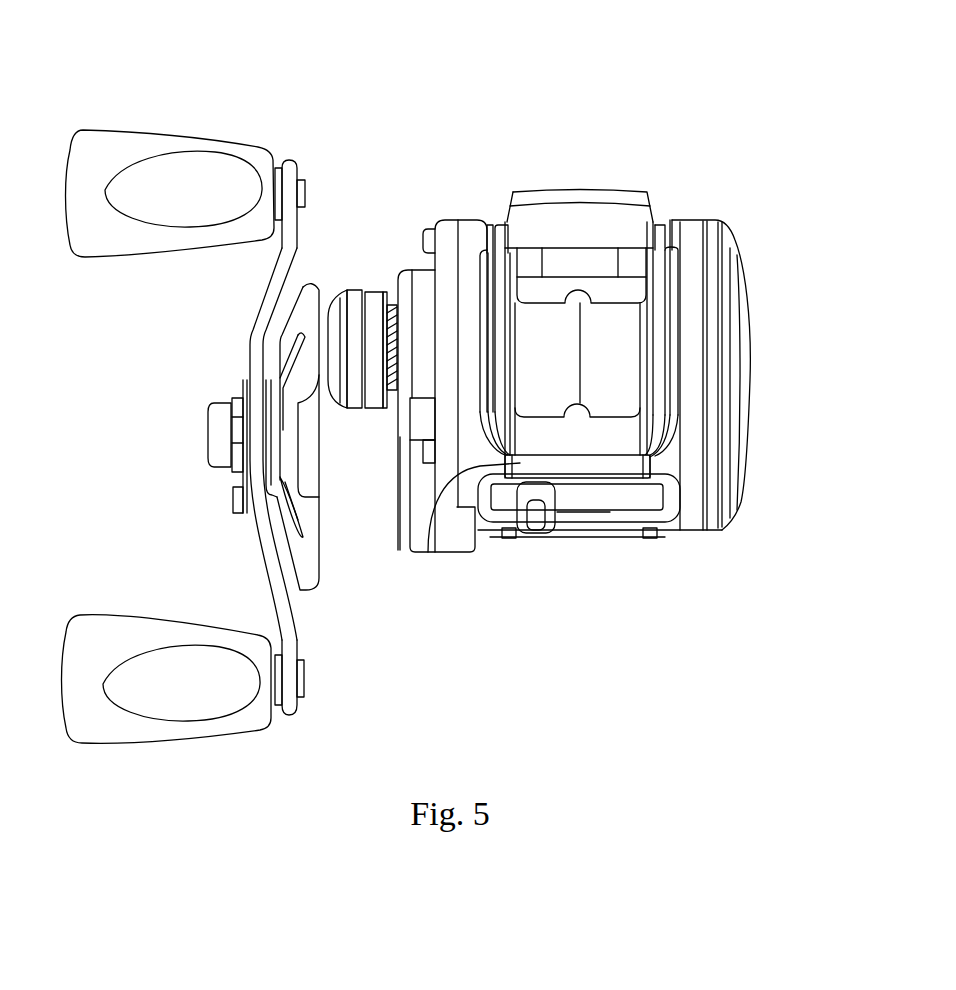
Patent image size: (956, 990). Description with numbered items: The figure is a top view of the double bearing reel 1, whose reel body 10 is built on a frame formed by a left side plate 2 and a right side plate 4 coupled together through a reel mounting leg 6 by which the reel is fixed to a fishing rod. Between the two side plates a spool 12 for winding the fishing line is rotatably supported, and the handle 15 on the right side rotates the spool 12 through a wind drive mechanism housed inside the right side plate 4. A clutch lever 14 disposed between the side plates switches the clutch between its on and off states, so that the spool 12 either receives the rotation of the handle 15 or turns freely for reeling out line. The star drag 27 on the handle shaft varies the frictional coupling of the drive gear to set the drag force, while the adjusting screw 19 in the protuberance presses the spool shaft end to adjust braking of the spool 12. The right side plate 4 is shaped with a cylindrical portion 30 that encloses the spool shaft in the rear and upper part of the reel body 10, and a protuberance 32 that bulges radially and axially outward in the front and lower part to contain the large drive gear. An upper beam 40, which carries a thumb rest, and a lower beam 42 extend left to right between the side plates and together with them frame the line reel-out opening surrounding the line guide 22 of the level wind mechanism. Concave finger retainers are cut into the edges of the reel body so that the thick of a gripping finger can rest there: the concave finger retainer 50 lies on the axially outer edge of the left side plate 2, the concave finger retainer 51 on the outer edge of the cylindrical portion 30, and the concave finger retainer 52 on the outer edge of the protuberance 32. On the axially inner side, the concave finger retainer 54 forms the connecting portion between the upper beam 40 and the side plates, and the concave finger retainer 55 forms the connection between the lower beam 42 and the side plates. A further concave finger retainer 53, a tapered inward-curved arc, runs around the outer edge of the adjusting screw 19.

The double bearing reel 1 is at (627, 100).
The left side plate 2 is at (711, 531).
The right side plate 4 is at (445, 553).
The reel mounting leg 6 is at (618, 290).
The reel body 10 is at (443, 197).
The spool 12 is at (613, 355).
The clutch lever 14 is at (612, 220).
The handle 15 is at (253, 343).
The adjusting screw 19 is at (353, 298).
The line guide 22 is at (540, 517).
The star drag 27 is at (308, 302).
The cylindrical portion 30 is at (450, 257).
The protuberance 32 is at (418, 520).
The upper beam 40 is at (617, 468).
The lower beam 42 is at (615, 538).
The concave finger retainer 50 is at (728, 242).
The concave finger retainer 51 is at (432, 225).
The concave finger retainer 52 is at (405, 280).
The concave finger retainer 53 is at (343, 390).
The concave finger retainer 54 is at (430, 552).
The concave finger retainer 55 is at (497, 525).